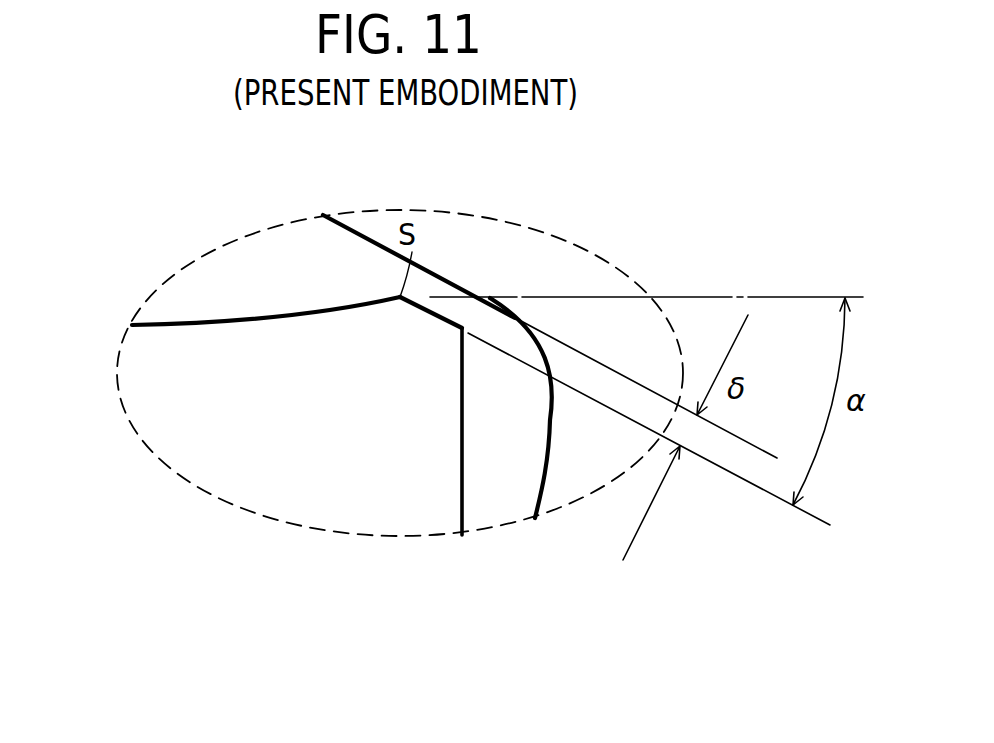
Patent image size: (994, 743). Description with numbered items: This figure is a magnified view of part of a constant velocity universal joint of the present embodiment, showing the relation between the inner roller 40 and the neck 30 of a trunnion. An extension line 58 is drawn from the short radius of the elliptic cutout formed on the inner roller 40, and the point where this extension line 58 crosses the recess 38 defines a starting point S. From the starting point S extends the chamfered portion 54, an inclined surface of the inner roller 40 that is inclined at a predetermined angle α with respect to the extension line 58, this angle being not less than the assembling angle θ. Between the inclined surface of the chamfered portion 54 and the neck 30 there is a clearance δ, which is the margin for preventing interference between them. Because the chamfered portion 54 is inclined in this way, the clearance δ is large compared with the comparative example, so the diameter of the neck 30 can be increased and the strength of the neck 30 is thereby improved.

The neck 30 is at (497, 247).
The recess 38 is at (217, 323).
The inner roller 40 is at (232, 478).
The chamfered portion 54 is at (447, 318).
The extension line 58 is at (810, 298).